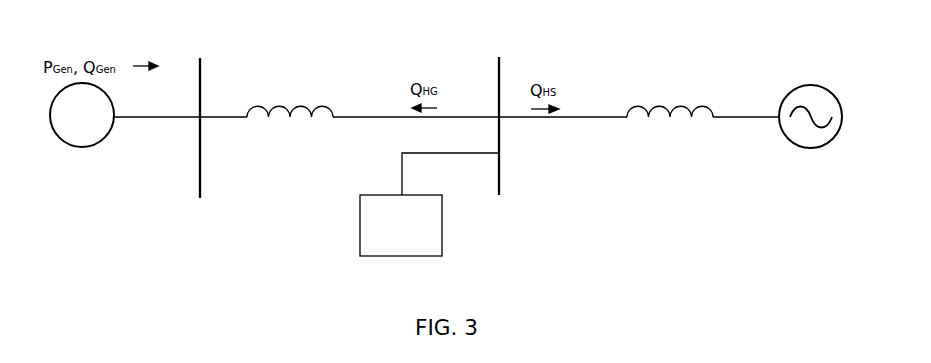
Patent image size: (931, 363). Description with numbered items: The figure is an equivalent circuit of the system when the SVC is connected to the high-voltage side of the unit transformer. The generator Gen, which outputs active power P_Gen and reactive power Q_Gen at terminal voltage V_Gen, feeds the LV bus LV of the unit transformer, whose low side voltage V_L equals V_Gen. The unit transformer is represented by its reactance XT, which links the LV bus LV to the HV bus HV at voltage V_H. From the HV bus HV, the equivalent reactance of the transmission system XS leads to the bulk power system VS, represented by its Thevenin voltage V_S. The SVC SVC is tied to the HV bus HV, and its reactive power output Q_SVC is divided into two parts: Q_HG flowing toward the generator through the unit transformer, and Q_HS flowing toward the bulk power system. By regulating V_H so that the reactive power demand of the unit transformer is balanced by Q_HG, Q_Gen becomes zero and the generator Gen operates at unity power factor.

The generator Gen is at (82, 131).
The LV bus LV is at (200, 127).
The HV bus HV is at (526, 125).
The unit transformer reactance XT is at (291, 105).
The equivalent reactance of the transmission system XS is at (671, 105).
The element SVC is at (391, 166).
The bulk power system VS is at (815, 105).